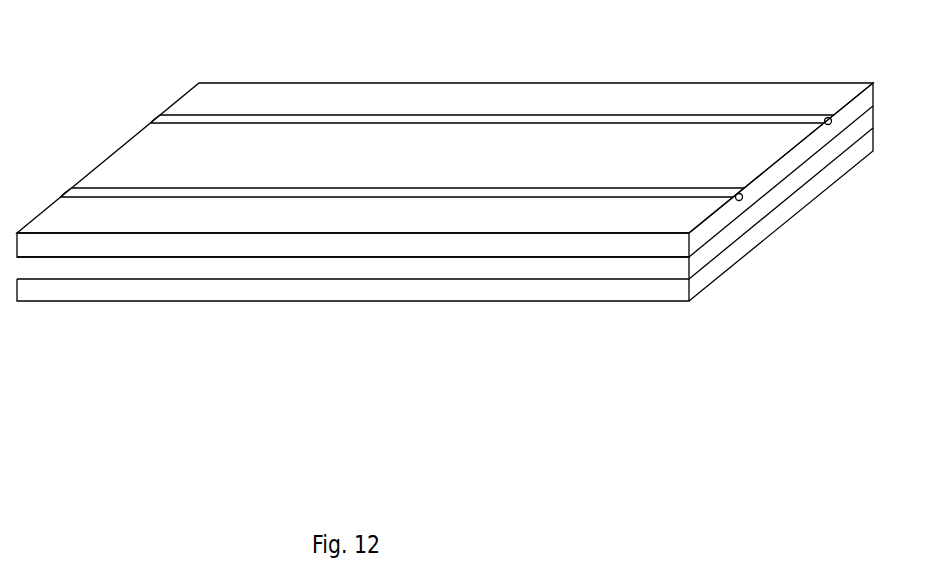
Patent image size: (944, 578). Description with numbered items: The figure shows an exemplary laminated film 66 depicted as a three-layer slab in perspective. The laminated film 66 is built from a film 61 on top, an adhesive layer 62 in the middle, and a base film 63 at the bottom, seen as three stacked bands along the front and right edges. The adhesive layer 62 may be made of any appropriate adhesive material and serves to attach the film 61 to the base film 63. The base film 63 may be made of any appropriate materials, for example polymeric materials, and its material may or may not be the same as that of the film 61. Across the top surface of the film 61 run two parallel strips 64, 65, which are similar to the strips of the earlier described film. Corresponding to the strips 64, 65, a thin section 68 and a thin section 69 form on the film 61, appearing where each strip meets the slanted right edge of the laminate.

The film 61 is at (509, 247).
The adhesive layer 62 is at (297, 268).
The base film 63 is at (145, 292).
The strip 64 is at (462, 193).
The strip 65 is at (638, 120).
The laminated film 66 is at (402, 167).
The thin section 68 is at (737, 202).
The thin section 69 is at (828, 130).